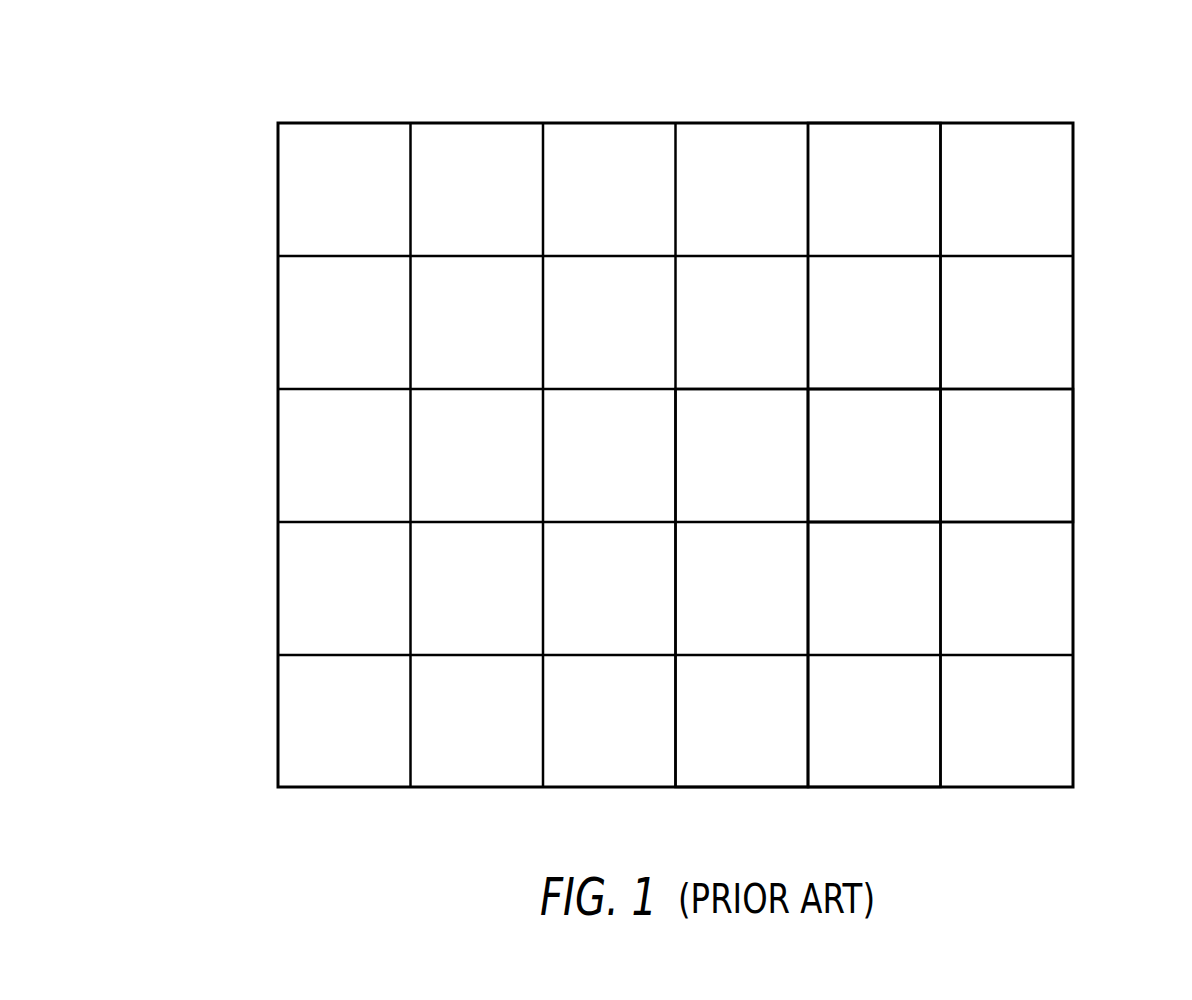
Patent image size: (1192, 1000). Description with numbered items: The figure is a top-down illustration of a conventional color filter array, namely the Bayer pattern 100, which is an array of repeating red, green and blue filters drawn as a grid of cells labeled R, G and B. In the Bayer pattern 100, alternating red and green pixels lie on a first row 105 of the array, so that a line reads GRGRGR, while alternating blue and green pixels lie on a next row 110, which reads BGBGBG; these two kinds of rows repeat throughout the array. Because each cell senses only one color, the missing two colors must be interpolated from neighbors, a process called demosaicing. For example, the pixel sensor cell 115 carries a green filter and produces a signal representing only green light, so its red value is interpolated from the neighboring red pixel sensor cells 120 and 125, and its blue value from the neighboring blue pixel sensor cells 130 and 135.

The Bayer pattern 100 is at (607, 454).
The first row 105 is at (230, 476).
The next row 110 is at (1073, 318).
The pixel sensor cell 115 is at (930, 477).
The red pixel sensor cell 120 is at (716, 490).
The red pixel sensor cell 125 is at (1053, 447).
The blue pixel sensor cell 130 is at (843, 285).
The blue pixel sensor cell 135 is at (843, 623).